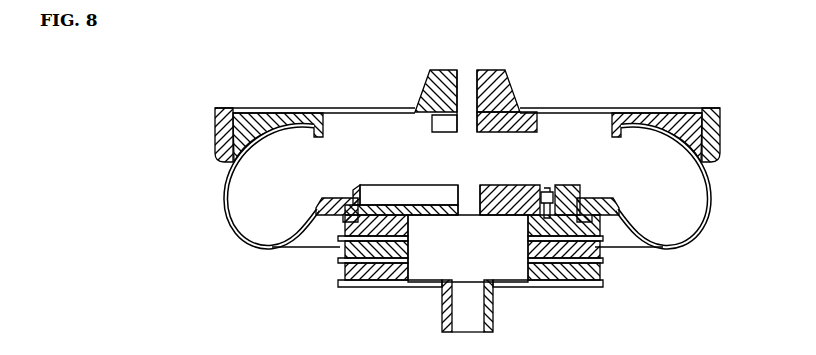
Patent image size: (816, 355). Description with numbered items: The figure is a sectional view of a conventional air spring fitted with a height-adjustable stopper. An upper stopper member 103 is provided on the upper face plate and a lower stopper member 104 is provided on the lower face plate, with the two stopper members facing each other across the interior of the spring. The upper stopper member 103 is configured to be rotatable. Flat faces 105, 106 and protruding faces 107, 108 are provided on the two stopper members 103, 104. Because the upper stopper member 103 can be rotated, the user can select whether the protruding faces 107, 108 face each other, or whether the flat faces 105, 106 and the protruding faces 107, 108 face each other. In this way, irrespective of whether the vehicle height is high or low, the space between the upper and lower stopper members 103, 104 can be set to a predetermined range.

The upper stopper member 103 is at (471, 109).
The lower stopper member 104 is at (470, 249).
The flat face 105 is at (432, 128).
The flat face 106 is at (427, 205).
The protruding face 107 is at (500, 134).
The protruding face 108 is at (510, 186).